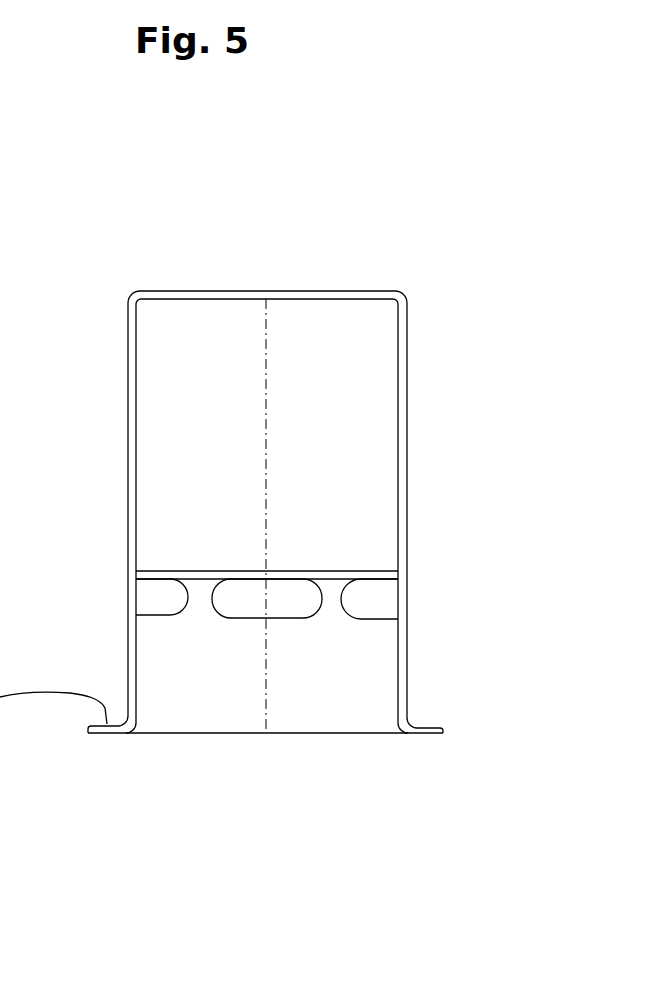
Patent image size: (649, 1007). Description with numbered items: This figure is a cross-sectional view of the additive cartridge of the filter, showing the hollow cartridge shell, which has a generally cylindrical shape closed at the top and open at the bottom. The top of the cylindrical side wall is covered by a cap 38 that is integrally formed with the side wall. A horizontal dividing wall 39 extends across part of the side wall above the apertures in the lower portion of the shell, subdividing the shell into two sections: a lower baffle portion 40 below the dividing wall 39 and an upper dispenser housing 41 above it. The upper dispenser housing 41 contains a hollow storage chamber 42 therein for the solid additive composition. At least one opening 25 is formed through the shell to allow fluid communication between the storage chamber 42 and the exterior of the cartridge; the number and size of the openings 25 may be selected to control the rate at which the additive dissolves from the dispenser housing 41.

The opening 25 is at (128, 387).
The cap 38 is at (287, 291).
The horizontal dividing wall 39 is at (292, 572).
The lower baffle portion 40 is at (414, 655).
The upper dispenser housing 41 is at (338, 403).
The hollow storage chamber 42 is at (393, 415).